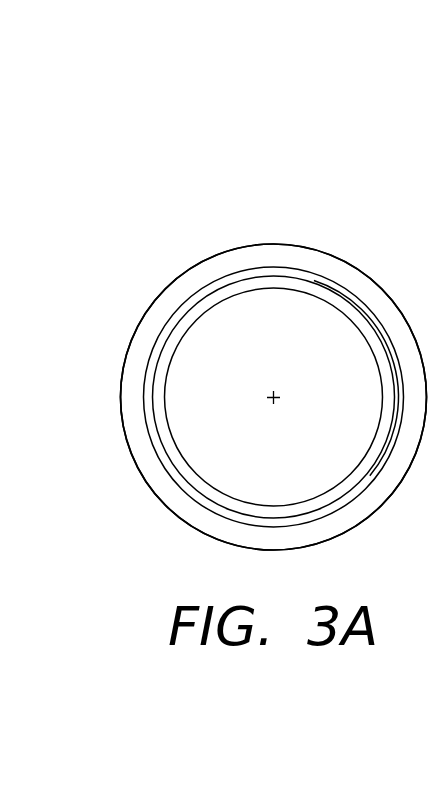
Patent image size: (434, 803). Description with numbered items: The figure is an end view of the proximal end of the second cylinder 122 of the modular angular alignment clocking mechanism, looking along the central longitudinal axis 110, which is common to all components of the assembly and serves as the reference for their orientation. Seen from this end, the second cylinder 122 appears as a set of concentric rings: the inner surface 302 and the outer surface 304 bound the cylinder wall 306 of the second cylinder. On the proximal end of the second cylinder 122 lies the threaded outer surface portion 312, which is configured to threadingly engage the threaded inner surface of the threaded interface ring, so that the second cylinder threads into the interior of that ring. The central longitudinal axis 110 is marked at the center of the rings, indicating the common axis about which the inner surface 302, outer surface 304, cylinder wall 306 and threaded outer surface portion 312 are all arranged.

The second cylinder 122 is at (206, 228).
The outer surface 304 is at (306, 246).
The cylinder wall 306 is at (371, 296).
The inner surface 302 is at (197, 317).
The threaded outer surface portion 312 is at (373, 473).
The central longitudinal axis 110 is at (275, 394).